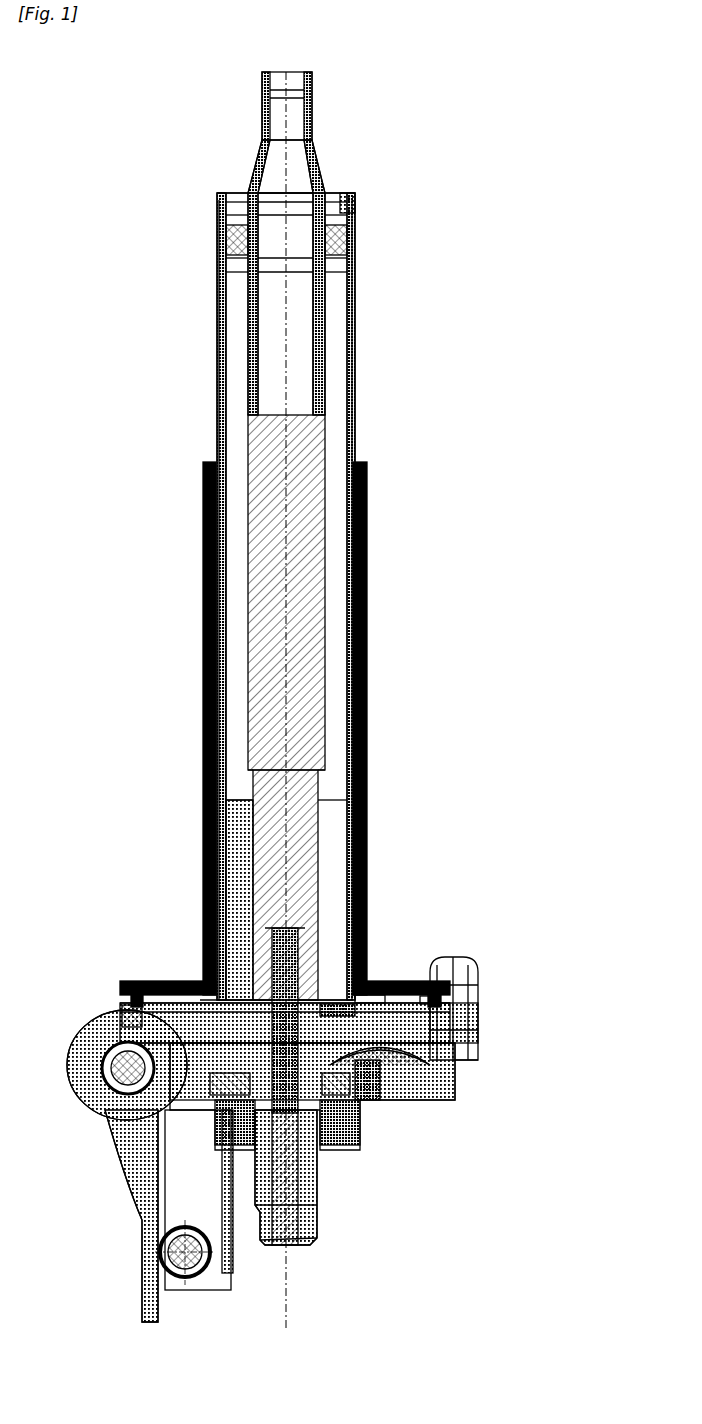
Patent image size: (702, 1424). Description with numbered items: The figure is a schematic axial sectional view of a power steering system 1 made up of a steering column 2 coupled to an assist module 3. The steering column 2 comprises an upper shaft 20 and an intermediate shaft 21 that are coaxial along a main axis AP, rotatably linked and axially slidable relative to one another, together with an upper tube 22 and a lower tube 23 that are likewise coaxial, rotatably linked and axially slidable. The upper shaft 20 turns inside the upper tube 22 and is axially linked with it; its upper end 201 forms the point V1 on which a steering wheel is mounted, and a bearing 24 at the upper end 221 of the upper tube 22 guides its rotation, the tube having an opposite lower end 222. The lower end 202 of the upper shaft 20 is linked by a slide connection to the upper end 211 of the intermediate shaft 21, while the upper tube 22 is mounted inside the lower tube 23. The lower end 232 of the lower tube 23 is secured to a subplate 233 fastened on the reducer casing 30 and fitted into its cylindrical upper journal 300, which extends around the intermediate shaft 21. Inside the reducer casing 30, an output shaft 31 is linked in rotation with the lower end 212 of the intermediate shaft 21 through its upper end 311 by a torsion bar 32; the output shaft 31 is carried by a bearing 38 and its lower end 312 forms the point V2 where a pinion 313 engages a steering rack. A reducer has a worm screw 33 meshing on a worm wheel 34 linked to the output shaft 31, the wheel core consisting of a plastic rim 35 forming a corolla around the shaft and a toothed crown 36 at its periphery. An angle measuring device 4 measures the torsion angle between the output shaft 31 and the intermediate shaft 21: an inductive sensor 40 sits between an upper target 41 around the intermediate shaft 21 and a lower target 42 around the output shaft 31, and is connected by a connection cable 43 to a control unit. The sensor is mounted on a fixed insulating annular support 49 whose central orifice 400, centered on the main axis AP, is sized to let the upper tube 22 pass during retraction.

The power steering system 1 is at (108, 238).
The steering column 2 is at (400, 393).
The assist module 3 is at (76, 1163).
The angle measuring device 4 is at (340, 1000).
The upper shaft 20 is at (325, 335).
The intermediate shaft 21 is at (295, 790).
The upper tube 22 is at (353, 437).
The lower tube 23 is at (362, 692).
The bearing 24 is at (340, 246).
The reducer casing 30 is at (410, 1092).
The output shaft 31 is at (318, 1228).
The torsion bar 32 is at (285, 1165).
The worm screw 33 is at (98, 1080).
The worm wheel 34 is at (428, 1066).
The rim 35 is at (345, 1082).
The toothed crown 36 is at (372, 1082).
The bearing 38 is at (272, 1032).
The inductive sensor 40 is at (445, 1010).
The upper target 41 is at (445, 988).
The lower target 42 is at (440, 1032).
The connection cable 43 is at (455, 1062).
The annular support 49 is at (112, 1020).
The upper end 201 is at (315, 80).
The lower end 202 is at (258, 770).
The upper end 211 is at (290, 418).
The lower end 212 is at (205, 990).
The upper end 221 is at (356, 200).
The lower end 222 is at (240, 808).
The lower end 232 is at (378, 968).
The subplate 233 is at (422, 960).
The upper journal 300 is at (130, 1003).
The upper end 311 is at (268, 1010).
The lower end 312 is at (306, 1246).
The pinion 313 is at (322, 1183).
The central orifice 400 is at (345, 1005).
The main axis AP is at (300, 1300).
The point V1 is at (262, 72).
The point V2 is at (266, 1248).